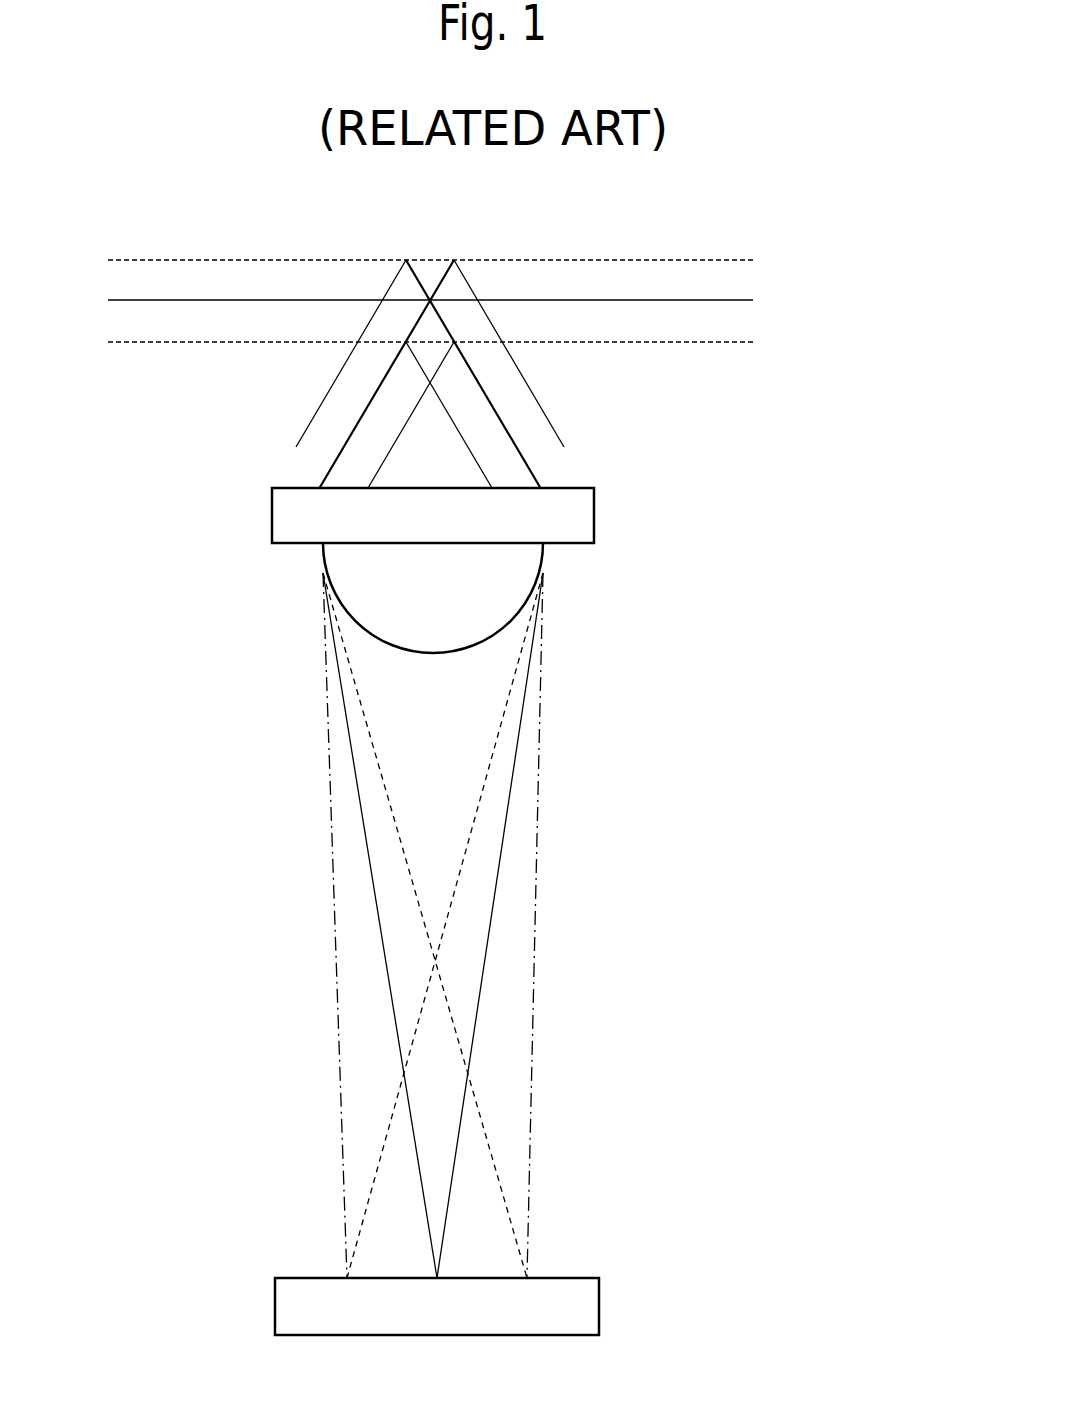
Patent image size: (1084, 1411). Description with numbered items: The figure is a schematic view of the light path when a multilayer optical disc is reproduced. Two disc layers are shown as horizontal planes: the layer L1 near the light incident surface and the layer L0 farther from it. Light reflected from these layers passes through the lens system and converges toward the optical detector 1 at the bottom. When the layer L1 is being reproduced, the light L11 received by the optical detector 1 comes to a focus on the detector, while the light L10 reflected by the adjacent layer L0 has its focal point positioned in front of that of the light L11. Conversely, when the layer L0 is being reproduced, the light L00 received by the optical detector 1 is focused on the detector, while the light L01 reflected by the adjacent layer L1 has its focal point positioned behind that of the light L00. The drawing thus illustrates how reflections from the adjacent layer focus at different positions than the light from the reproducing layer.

The optical detector 1 is at (599, 1305).
The layer L0 is at (501, 288).
The layer L1 is at (501, 321).
The light L10 is at (422, 908).
The light L01 is at (342, 1038).
The light L00 is at (418, 1153).
The light L11 is at (587, 1187).